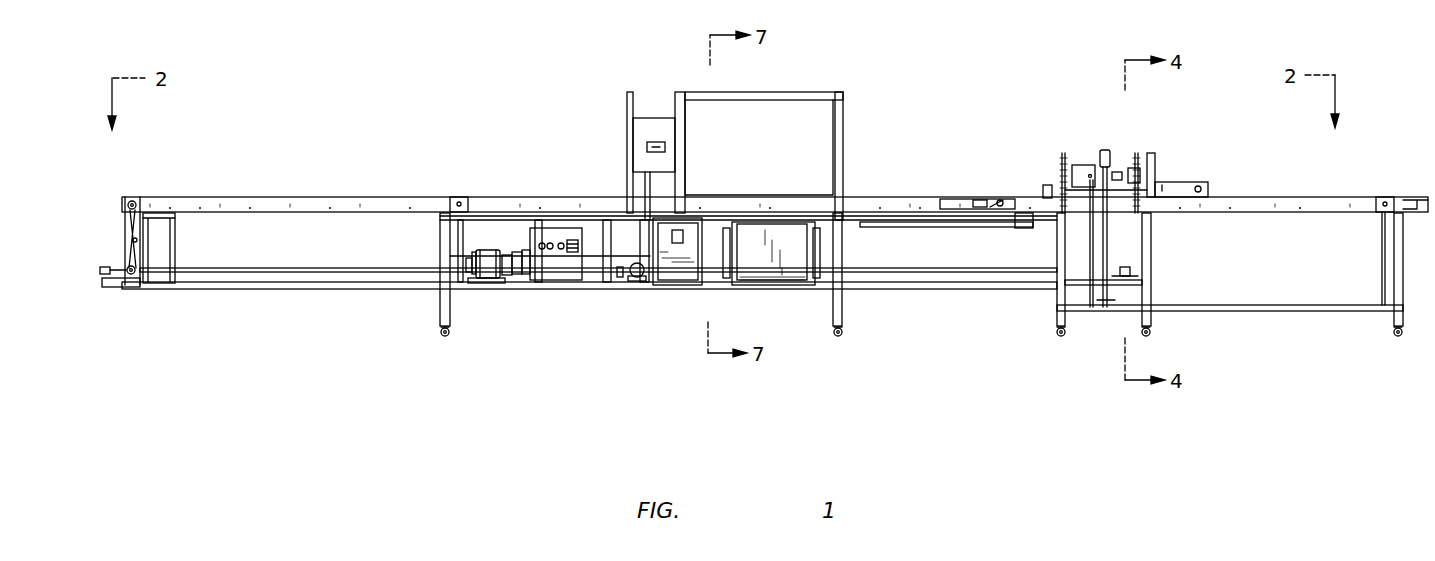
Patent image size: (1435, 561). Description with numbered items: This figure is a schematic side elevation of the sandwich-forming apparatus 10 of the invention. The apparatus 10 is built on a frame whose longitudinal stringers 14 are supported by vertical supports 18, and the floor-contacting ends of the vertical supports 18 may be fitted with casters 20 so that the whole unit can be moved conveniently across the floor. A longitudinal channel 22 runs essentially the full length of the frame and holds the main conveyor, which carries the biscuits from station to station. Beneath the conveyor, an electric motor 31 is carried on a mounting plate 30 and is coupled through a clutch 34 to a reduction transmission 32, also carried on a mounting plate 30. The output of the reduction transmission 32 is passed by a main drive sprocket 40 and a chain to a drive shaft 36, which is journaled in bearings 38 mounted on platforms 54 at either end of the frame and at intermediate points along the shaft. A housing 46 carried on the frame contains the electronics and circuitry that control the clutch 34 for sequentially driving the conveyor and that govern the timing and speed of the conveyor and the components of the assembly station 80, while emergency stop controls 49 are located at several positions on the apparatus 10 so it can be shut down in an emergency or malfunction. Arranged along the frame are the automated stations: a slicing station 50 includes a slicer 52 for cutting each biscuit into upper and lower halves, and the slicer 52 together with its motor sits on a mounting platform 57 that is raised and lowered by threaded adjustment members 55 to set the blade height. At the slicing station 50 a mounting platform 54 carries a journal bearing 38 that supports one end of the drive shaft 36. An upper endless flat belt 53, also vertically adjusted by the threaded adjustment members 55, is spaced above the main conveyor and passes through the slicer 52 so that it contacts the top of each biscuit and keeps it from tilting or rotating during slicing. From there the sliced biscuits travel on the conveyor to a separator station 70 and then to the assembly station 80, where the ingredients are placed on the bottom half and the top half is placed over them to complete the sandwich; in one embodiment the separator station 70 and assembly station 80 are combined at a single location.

The apparatus 10 is at (332, 132).
The longitudinal stringers 14 is at (305, 290).
The vertical supports 18 is at (176, 252).
The casters 20 is at (450, 335).
The longitudinal channel 22 is at (302, 197).
The mounting plate 30 is at (558, 283).
The electric motor 31 is at (636, 280).
The reduction transmission 32 is at (491, 250).
The clutch 34 is at (517, 284).
The drive shaft 36 is at (291, 268).
The bearings 38 is at (108, 266).
The main drive sprocket 40 is at (465, 249).
The housing 46 is at (773, 280).
The emergency stop controls 49 is at (460, 197).
The slicing station 50 is at (1126, 135).
The slicer 52 is at (1158, 158).
The upper endless flat belt 53 is at (1180, 181).
The mounting platform 54 is at (118, 288).
The threaded adjustment members 55 is at (1060, 158).
The mounting platform 57 is at (1083, 165).
The separator station 70 is at (973, 175).
The assembly station 80 is at (778, 156).